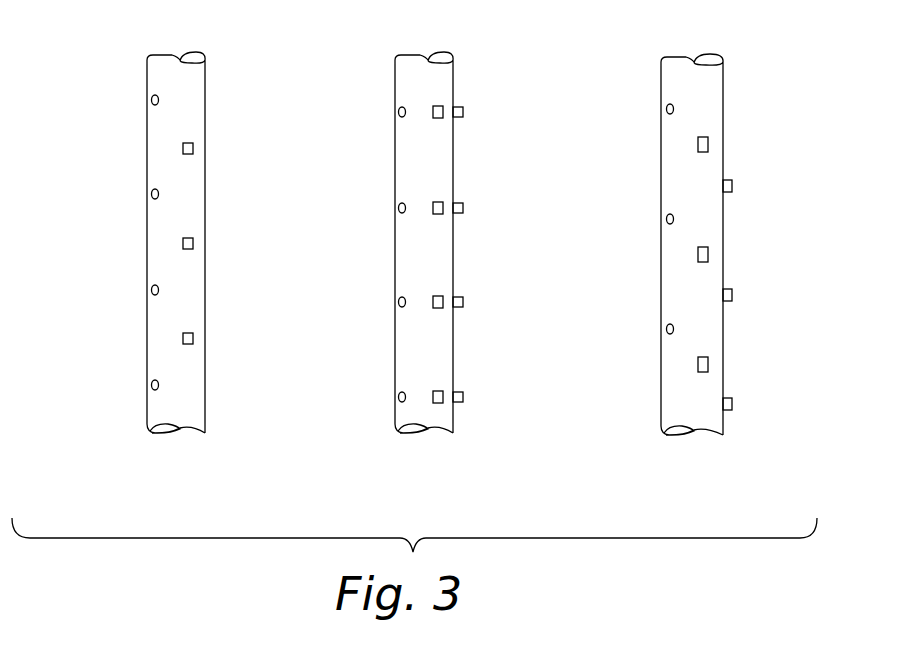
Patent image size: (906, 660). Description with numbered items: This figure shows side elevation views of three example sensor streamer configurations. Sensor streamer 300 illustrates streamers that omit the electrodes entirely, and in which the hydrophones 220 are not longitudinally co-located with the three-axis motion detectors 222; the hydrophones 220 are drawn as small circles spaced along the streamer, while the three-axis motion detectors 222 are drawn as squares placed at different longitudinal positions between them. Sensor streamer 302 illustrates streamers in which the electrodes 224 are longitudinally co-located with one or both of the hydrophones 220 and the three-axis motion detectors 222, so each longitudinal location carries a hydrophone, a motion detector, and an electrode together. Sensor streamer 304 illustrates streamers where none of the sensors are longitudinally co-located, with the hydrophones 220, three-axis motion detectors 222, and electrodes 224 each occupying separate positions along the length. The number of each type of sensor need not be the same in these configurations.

The sensor streamer 300 is at (124, 56).
The sensor streamer 302 is at (370, 57).
The sensor streamer 304 is at (638, 57).
The hydrophones 220 is at (151, 100).
The three-axis motion detectors 222 is at (195, 147).
The electrodes 224 is at (465, 112).